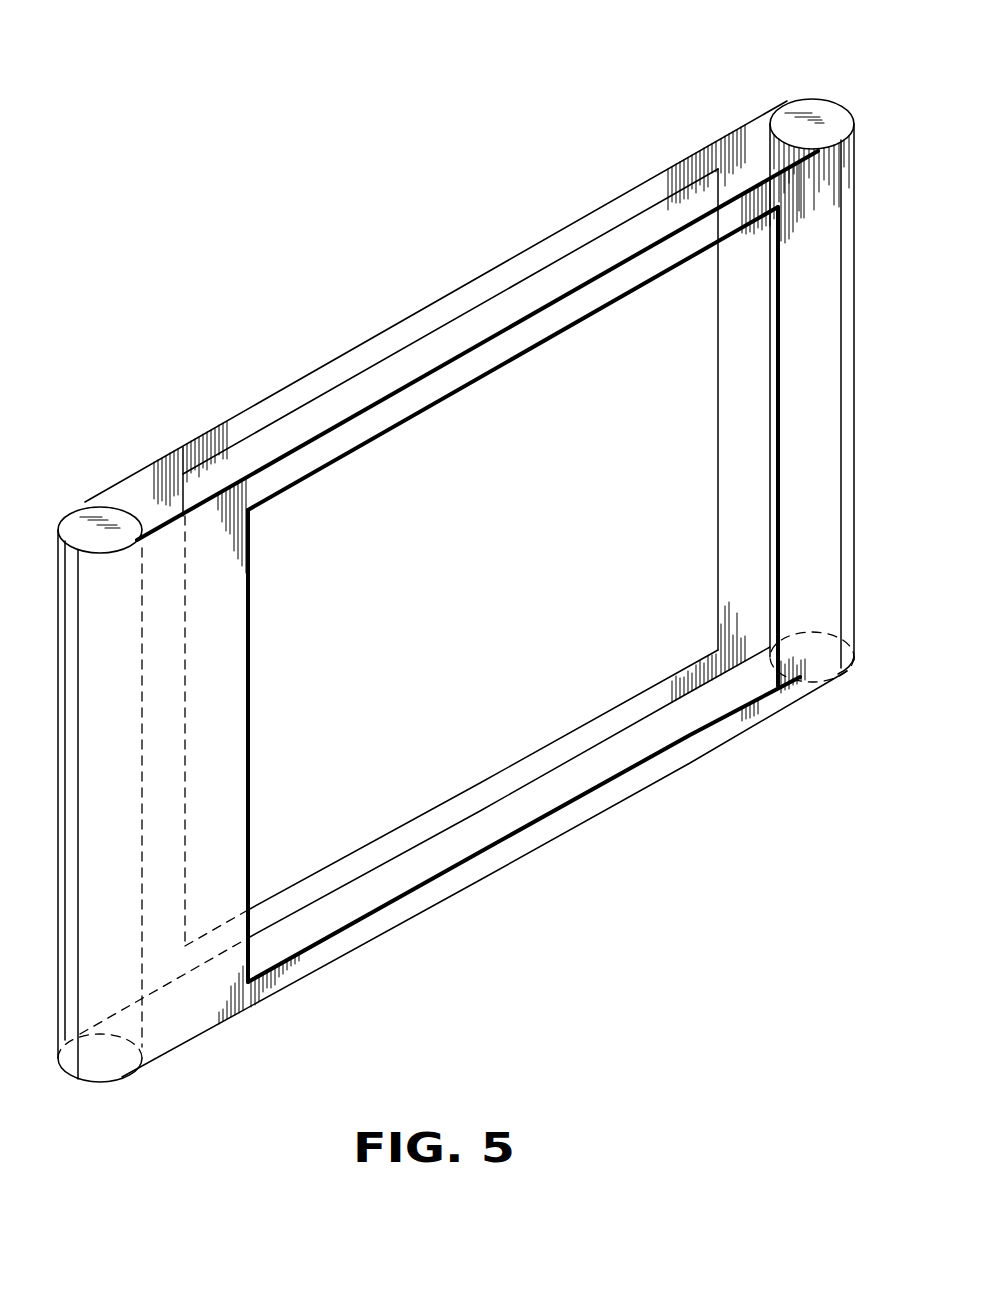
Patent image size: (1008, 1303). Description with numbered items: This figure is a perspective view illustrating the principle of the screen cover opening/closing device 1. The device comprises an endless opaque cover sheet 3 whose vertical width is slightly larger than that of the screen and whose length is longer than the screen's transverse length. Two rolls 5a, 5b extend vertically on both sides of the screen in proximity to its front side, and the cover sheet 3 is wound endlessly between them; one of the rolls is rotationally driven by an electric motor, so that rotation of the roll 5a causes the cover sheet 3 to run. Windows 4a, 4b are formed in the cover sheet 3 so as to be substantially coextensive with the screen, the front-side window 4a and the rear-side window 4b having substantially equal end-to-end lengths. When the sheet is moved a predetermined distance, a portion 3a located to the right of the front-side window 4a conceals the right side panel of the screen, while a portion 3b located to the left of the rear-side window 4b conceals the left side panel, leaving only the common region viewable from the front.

The screen cover opening/closing device 1 is at (690, 130).
The endless opaque cover sheet 3 is at (392, 327).
The portion of the cover sheet 3a is at (788, 404).
The portion of the cover sheet 3b is at (196, 476).
The front-side window 4a is at (534, 354).
The rear-side window 4b is at (466, 318).
The roll 5a is at (108, 507).
The roll 5b is at (808, 103).